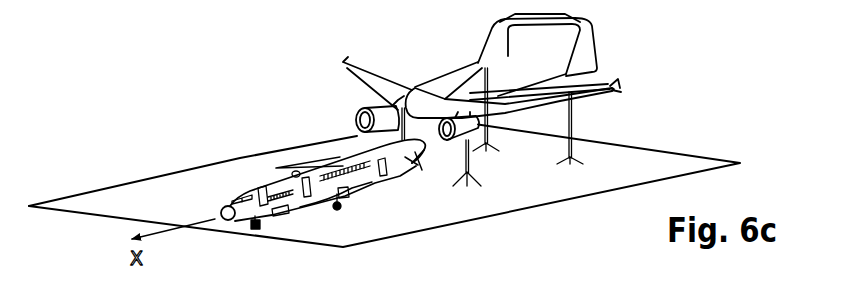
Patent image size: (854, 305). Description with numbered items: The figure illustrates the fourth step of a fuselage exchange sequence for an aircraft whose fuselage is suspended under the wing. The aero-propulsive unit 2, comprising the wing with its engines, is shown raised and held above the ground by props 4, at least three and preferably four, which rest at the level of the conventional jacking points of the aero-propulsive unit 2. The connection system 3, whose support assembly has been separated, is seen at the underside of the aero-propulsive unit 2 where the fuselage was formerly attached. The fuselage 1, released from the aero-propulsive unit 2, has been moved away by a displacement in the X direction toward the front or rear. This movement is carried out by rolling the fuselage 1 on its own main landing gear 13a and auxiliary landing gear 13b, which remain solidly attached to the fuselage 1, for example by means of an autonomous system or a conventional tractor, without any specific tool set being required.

The fuselage 1 is at (286, 228).
The aero-propulsive unit 2 is at (350, 87).
The connection system 3 is at (398, 132).
The props 4 is at (573, 128).
The main landing gear 13a is at (337, 210).
The auxiliary landing gear 13b is at (253, 229).